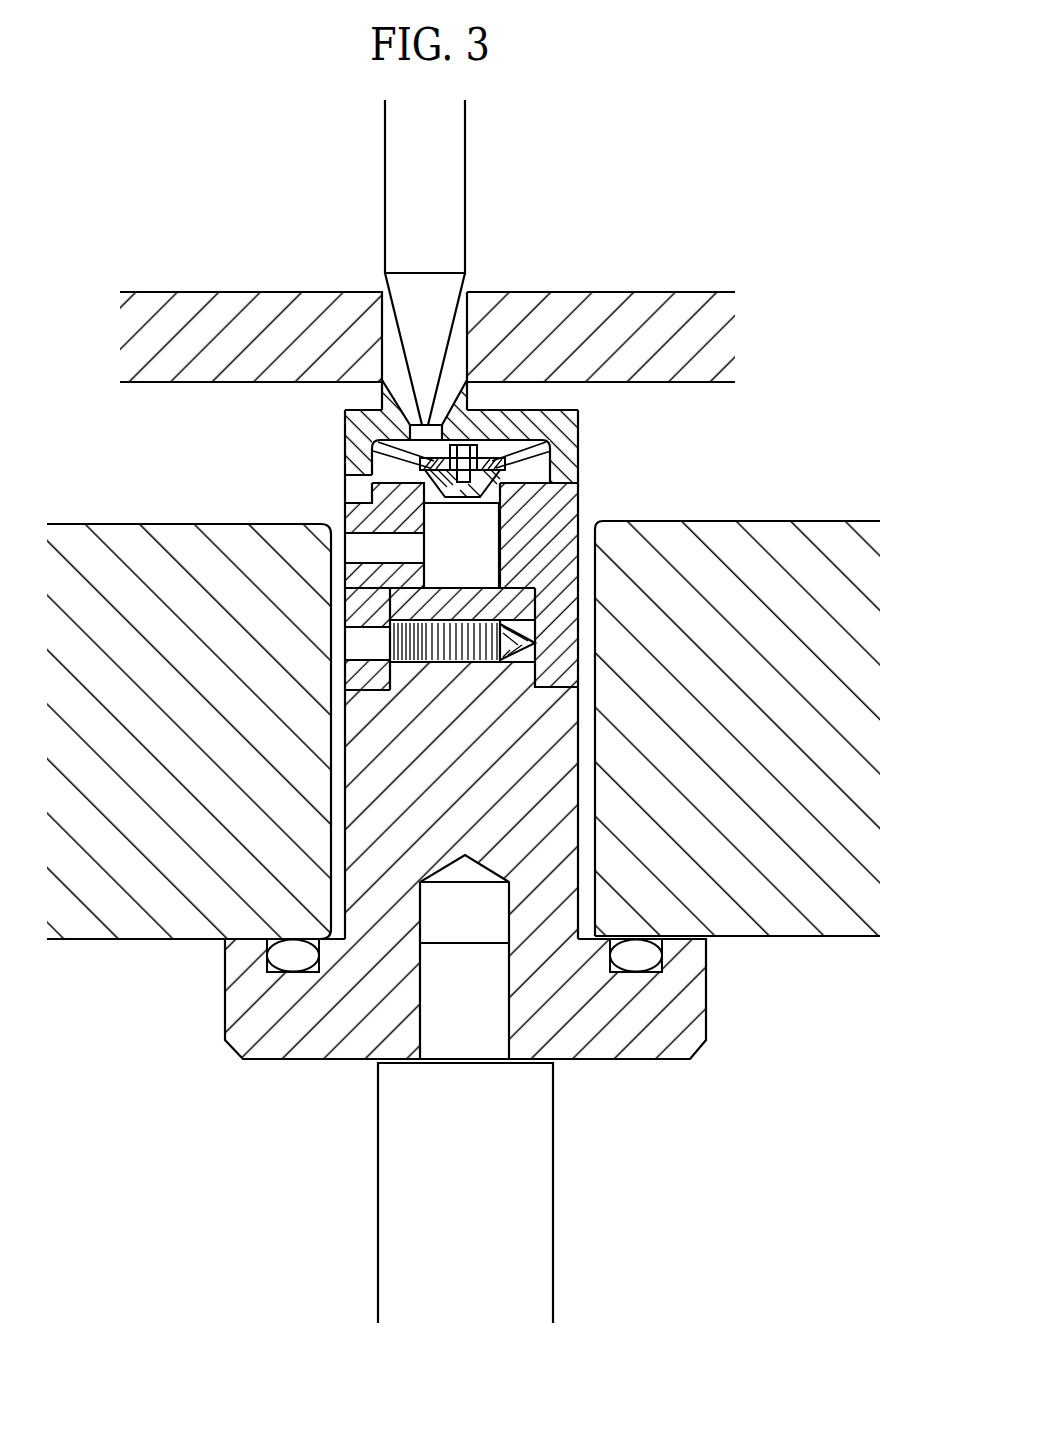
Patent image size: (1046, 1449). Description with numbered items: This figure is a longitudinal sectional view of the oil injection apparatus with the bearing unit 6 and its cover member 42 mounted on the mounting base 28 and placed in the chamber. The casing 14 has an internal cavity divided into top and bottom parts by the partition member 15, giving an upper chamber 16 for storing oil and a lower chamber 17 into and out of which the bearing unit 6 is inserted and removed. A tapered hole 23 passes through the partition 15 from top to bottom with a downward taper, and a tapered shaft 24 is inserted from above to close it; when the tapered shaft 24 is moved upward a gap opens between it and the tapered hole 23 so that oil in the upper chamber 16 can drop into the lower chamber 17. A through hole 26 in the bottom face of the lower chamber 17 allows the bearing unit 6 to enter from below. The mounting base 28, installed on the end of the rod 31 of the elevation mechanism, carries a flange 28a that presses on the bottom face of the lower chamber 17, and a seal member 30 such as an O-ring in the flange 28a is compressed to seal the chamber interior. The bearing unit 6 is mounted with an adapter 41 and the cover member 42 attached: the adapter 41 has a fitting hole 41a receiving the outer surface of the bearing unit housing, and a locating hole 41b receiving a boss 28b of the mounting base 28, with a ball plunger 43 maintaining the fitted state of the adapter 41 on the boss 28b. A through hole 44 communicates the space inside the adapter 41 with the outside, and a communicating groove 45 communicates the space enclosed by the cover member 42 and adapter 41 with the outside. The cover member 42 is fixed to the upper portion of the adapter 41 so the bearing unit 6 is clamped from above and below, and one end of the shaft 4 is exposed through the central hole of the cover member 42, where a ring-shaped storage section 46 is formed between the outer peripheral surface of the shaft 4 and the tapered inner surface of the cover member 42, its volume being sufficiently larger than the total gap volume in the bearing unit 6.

The shaft 4 is at (465, 446).
The bearing unit 6 is at (531, 440).
The casing 14 is at (816, 938).
The partition member 15 is at (175, 316).
The upper chamber 16 is at (252, 256).
The lower chamber 17 is at (160, 441).
The tapered hole 23 is at (452, 328).
The tapered shaft 24 is at (464, 175).
The through hole 26 is at (580, 606).
The mounting base 28 is at (352, 858).
The flange 28a is at (312, 1060).
The boss 28b is at (348, 680).
The seal member 30 is at (268, 958).
The rod 31 is at (540, 1188).
The adapter 41 is at (575, 606).
The fitting hole 41a is at (500, 532).
The locating hole 41b is at (392, 606).
The cover member 42 is at (580, 438).
The ball plunger 43 is at (508, 648).
The through hole 44 is at (350, 538).
The communicating groove 45 is at (345, 483).
The storage section 46 is at (493, 428).